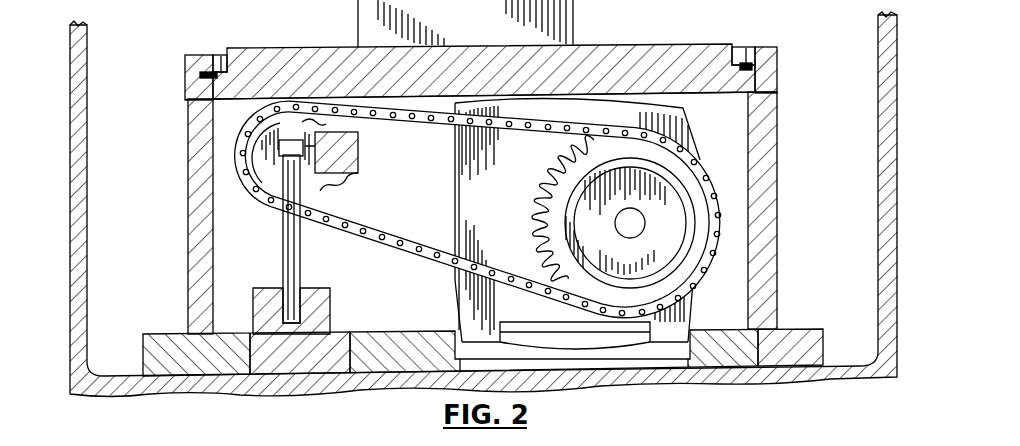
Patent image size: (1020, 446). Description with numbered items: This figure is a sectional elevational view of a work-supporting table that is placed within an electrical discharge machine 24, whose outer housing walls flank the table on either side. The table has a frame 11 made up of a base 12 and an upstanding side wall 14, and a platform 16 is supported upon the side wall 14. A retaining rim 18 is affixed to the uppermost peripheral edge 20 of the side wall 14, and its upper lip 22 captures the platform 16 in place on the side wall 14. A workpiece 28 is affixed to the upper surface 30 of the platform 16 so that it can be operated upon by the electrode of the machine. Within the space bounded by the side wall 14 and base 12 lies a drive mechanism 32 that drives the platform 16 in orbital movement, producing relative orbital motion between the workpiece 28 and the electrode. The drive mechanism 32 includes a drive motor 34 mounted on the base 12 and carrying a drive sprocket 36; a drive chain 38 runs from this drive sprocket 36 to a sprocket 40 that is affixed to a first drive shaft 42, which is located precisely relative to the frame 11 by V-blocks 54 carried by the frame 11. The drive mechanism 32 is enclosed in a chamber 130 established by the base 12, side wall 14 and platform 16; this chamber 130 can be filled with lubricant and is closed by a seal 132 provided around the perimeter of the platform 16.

The frame 11 is at (191, 285).
The base 12 is at (375, 345).
The side wall 14 is at (193, 203).
The platform 16 is at (638, 60).
The retaining rim 18 is at (191, 53).
The uppermost peripheral edge 20 is at (185, 91).
The upper lip 22 is at (204, 58).
The electrical discharge machine 24 is at (93, 55).
The workpiece 28 is at (358, 14).
The upper surface 30 is at (630, 39).
The drive mechanism 32 is at (456, 166).
The drive motor 34 is at (466, 192).
The drive sprocket 36 is at (552, 170).
The drive chain 38 is at (370, 222).
The sprocket 40 is at (273, 178).
The first drive shaft 42 is at (248, 170).
The V-blocks 54 is at (305, 126).
The chamber 130 is at (398, 286).
The seal 132 is at (217, 75).